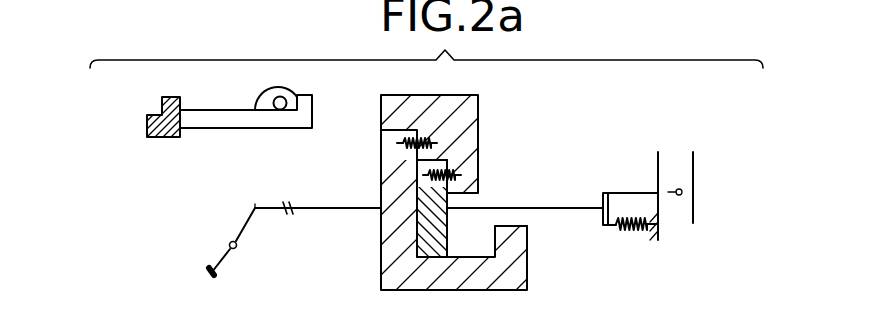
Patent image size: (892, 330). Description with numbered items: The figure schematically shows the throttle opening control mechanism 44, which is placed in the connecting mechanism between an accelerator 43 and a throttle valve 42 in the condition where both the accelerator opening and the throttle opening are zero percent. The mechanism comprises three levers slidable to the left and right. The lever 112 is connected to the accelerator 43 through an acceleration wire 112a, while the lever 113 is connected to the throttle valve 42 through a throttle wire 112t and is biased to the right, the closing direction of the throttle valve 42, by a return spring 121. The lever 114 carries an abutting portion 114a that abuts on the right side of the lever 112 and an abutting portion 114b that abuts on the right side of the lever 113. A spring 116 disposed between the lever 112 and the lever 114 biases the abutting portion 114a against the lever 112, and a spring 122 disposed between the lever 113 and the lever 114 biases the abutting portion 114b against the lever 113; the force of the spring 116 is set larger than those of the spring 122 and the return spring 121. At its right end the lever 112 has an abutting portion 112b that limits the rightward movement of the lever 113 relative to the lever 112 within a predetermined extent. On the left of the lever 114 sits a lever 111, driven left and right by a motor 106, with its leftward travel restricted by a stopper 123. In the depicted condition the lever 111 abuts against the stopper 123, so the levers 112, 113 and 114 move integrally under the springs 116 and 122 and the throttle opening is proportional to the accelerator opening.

The throttle opening control mechanism 44 is at (552, 117).
The stopper 123 is at (156, 135).
The lever 111 is at (226, 128).
The motor 106 is at (262, 98).
The acceleration wire 112a is at (326, 207).
The accelerator 43 is at (210, 265).
The lever 114 is at (470, 105).
The lever 112 is at (397, 272).
The abutting portion 112b is at (494, 236).
The abutting portion 114a is at (417, 160).
The lever 113 is at (418, 236).
The spring 116 is at (440, 133).
The spring 122 is at (463, 172).
The abutting portion 114b is at (474, 190).
The throttle wire 112t is at (584, 205).
The return spring 121 is at (630, 228).
The throttle valve 42 is at (682, 192).